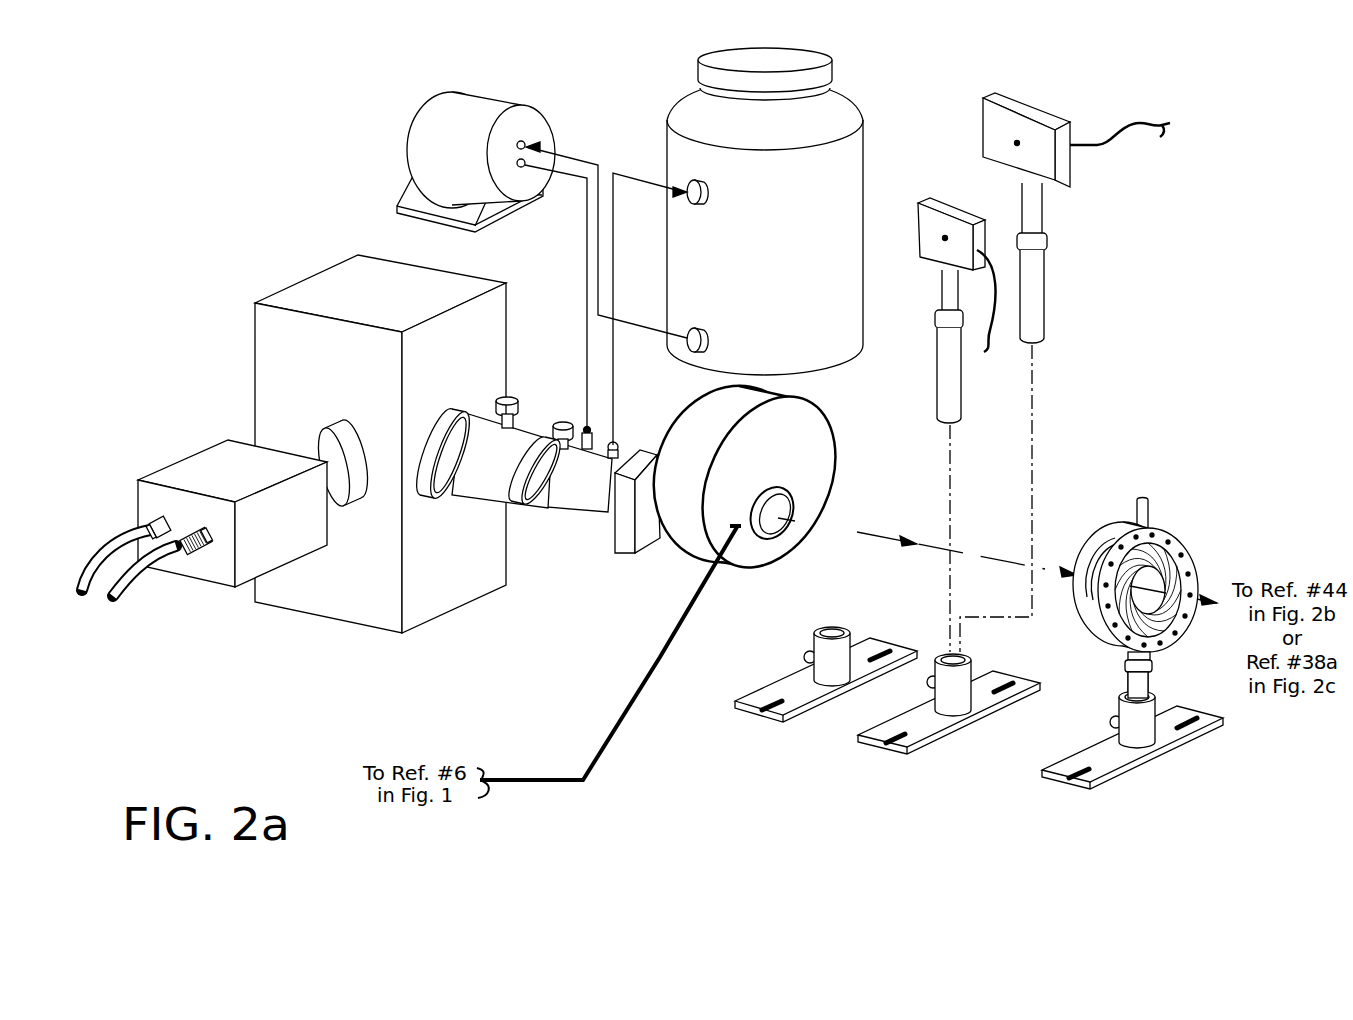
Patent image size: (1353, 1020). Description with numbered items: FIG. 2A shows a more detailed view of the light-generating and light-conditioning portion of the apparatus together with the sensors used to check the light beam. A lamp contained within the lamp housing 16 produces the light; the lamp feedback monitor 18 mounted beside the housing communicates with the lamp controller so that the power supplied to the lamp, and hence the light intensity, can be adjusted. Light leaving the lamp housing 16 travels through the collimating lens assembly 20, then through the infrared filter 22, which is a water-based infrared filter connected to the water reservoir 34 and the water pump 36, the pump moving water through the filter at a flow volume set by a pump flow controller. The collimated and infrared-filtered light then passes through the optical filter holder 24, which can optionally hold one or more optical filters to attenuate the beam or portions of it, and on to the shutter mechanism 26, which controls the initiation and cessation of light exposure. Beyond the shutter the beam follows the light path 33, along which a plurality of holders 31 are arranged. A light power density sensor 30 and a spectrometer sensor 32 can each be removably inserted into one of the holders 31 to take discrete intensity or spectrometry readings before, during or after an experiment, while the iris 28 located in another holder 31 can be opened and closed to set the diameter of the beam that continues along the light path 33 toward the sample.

The lamp housing 16 is at (272, 358).
The lamp feedback monitor 18 is at (203, 462).
The collimating lens assembly 20 is at (489, 492).
The infrared filter 22 is at (560, 500).
The optical filter holder 24 is at (620, 556).
The shutter mechanism 26 is at (818, 475).
The iris 28 is at (1193, 547).
The light power density sensor 30 is at (947, 202).
The holder 31 is at (781, 691).
The spectrometer sensor 32 is at (1018, 96).
The light path 33 is at (858, 535).
The water reservoir 34 is at (694, 108).
The water pump 36 is at (444, 102).